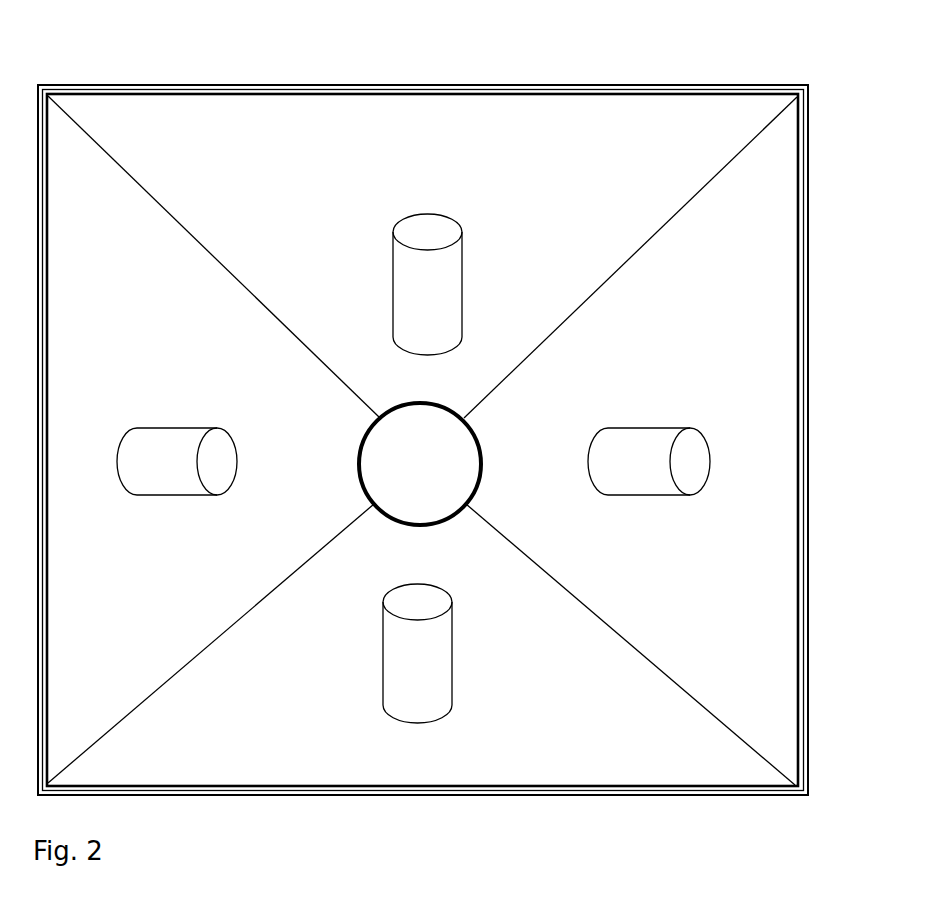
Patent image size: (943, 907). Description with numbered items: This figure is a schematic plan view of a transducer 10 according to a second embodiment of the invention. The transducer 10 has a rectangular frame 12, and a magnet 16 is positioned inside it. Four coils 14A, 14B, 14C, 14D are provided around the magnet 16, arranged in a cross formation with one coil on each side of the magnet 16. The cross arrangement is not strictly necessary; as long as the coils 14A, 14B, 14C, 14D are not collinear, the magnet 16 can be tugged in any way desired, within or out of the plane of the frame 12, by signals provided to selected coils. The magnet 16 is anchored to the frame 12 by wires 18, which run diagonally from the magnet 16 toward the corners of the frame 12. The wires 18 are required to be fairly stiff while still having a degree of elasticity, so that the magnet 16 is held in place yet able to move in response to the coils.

The transducer 10 is at (622, 80).
The frame 12 is at (237, 88).
The coil 14A is at (192, 433).
The coil 14B is at (457, 278).
The coil 14C is at (633, 423).
The coil 14D is at (378, 685).
The magnet 16 is at (482, 452).
The wires 18 is at (648, 655).